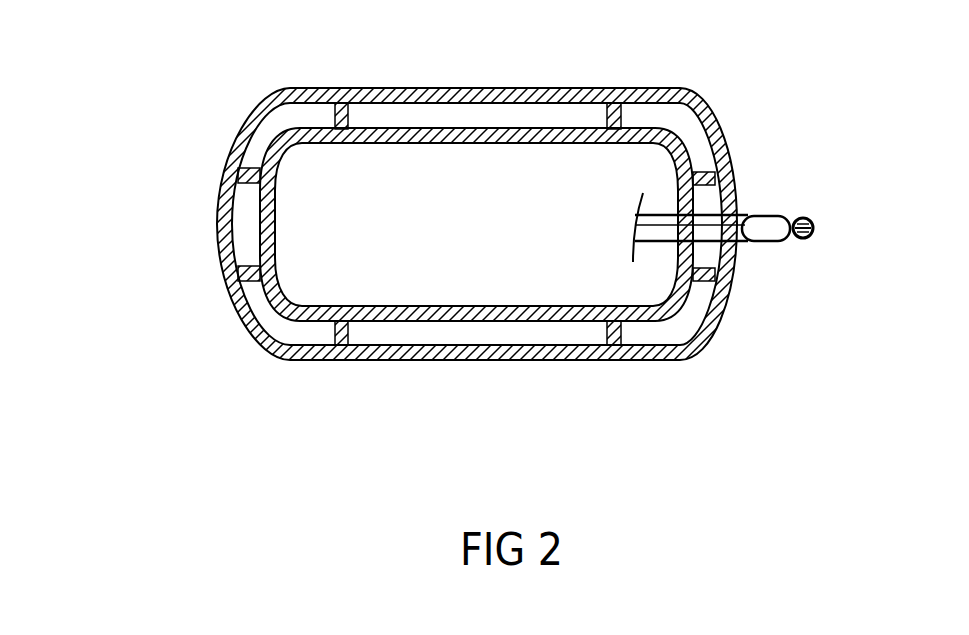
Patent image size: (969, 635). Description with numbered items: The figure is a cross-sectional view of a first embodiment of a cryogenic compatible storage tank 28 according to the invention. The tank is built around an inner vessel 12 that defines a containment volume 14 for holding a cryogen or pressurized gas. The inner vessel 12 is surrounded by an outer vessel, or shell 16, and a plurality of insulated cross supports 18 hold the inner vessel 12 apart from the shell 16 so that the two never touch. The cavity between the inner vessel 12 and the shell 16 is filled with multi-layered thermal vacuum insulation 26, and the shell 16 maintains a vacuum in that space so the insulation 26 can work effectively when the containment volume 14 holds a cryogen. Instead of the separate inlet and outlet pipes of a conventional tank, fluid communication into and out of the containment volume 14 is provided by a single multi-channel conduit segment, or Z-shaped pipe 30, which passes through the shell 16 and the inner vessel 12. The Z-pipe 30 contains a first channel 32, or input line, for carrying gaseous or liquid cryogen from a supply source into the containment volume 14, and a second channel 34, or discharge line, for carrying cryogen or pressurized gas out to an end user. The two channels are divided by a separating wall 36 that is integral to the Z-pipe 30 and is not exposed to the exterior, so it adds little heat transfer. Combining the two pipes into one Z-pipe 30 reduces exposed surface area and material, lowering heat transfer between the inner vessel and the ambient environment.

The cryogenic compatible storage tank 28 is at (141, 71).
The shell 16 is at (425, 95).
The inner vessel 12 is at (672, 148).
The multi-layered thermal vacuum insulation 26 is at (520, 117).
The insulated cross supports 18 is at (622, 116).
The containment volume 14 is at (470, 277).
The Z-shaped pipe 30 is at (771, 208).
The second channel 34 is at (806, 217).
The separating wall 36 is at (814, 229).
The first channel 32 is at (803, 242).